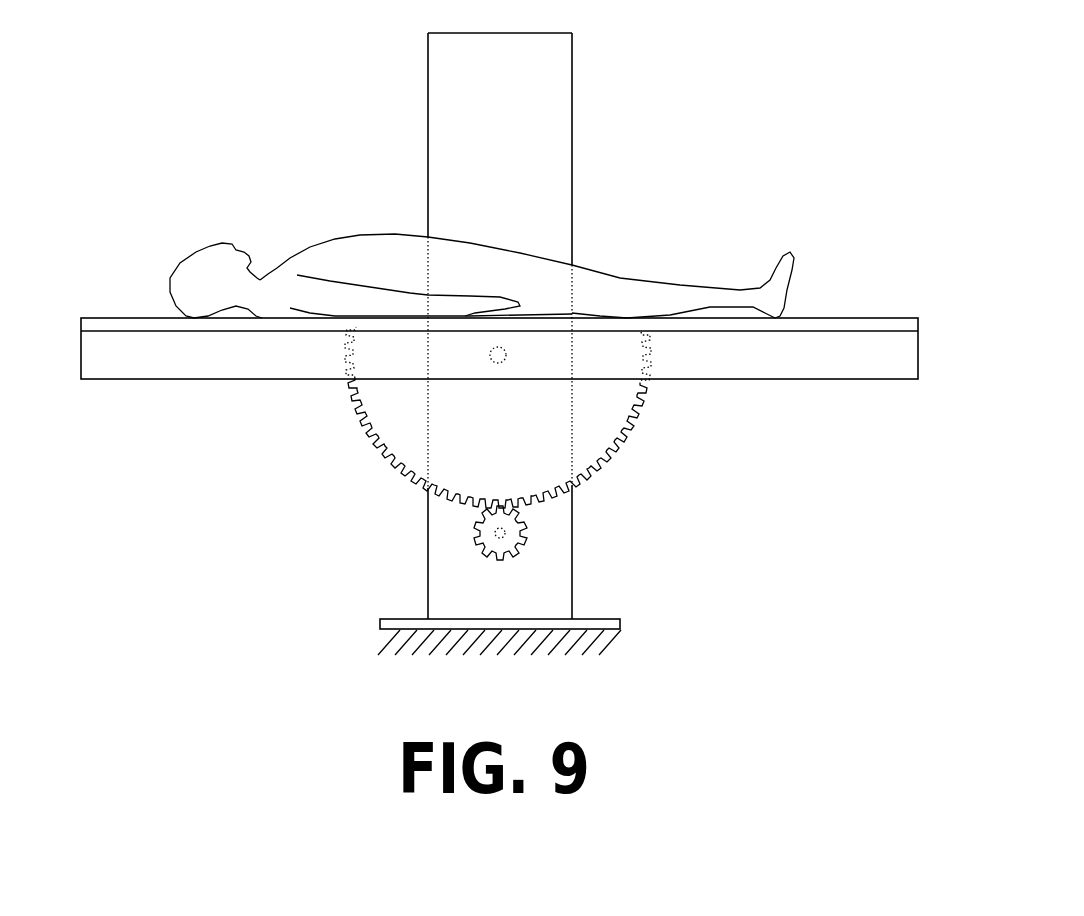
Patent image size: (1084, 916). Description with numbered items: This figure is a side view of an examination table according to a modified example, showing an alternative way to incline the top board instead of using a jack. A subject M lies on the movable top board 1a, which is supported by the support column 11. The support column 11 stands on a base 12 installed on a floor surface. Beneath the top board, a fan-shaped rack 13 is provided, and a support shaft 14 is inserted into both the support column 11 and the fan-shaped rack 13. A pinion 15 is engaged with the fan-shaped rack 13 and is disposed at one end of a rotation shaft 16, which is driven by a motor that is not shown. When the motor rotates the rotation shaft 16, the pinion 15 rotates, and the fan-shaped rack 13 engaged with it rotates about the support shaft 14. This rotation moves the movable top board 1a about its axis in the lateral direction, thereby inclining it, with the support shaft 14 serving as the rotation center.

The support column 11 is at (422, 178).
The subject M is at (597, 275).
The movable top board 1a is at (857, 324).
The support shaft 14 is at (512, 360).
The fan-shaped rack 13 is at (330, 399).
The pinion 15 is at (471, 538).
The rotation shaft 16 is at (490, 555).
The base 12 is at (396, 615).